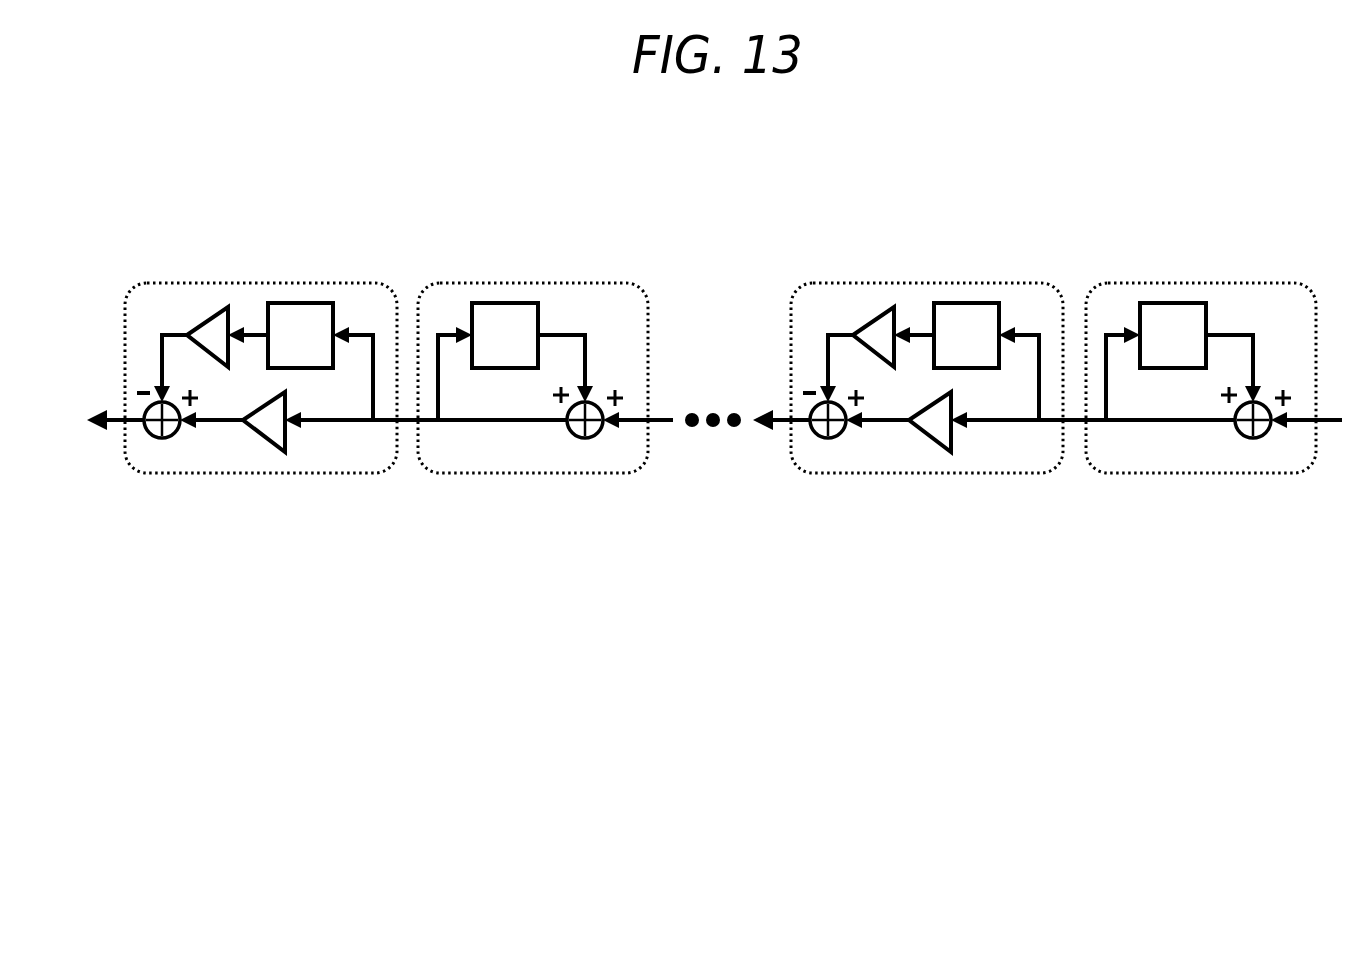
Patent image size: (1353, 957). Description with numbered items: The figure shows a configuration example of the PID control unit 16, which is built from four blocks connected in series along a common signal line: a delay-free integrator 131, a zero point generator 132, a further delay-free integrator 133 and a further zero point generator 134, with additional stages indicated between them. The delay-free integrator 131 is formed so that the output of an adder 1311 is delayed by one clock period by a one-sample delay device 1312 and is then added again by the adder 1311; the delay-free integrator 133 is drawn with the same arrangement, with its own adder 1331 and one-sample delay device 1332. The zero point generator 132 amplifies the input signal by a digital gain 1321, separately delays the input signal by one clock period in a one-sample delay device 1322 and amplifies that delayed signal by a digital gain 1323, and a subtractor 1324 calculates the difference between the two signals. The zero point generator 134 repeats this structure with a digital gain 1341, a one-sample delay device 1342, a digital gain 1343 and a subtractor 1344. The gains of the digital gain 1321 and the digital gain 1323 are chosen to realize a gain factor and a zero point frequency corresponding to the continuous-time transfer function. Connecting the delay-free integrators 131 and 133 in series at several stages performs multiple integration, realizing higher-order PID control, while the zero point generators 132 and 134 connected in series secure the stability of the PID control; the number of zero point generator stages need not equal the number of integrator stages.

The PID control unit 16 is at (925, 152).
The delay-free integrator 131 is at (1199, 283).
The zero point generator 132 is at (933, 283).
The delay-free integrator 133 is at (530, 283).
The zero point generator 134 is at (262, 283).
The adder 1311 is at (1253, 440).
The one-sample delay device 1312 is at (1176, 370).
The digital gain 1321 is at (935, 445).
The one-sample delay device 1322 is at (975, 370).
The digital gain 1323 is at (875, 314).
The subtractor 1324 is at (827, 440).
The adder 1331 is at (585, 440).
The delay element 1332 is at (508, 370).
The multiplier 1341 is at (268, 445).
The delay element 1342 is at (307, 370).
The multiplier 1343 is at (207, 314).
The subtractor 1344 is at (160, 440).